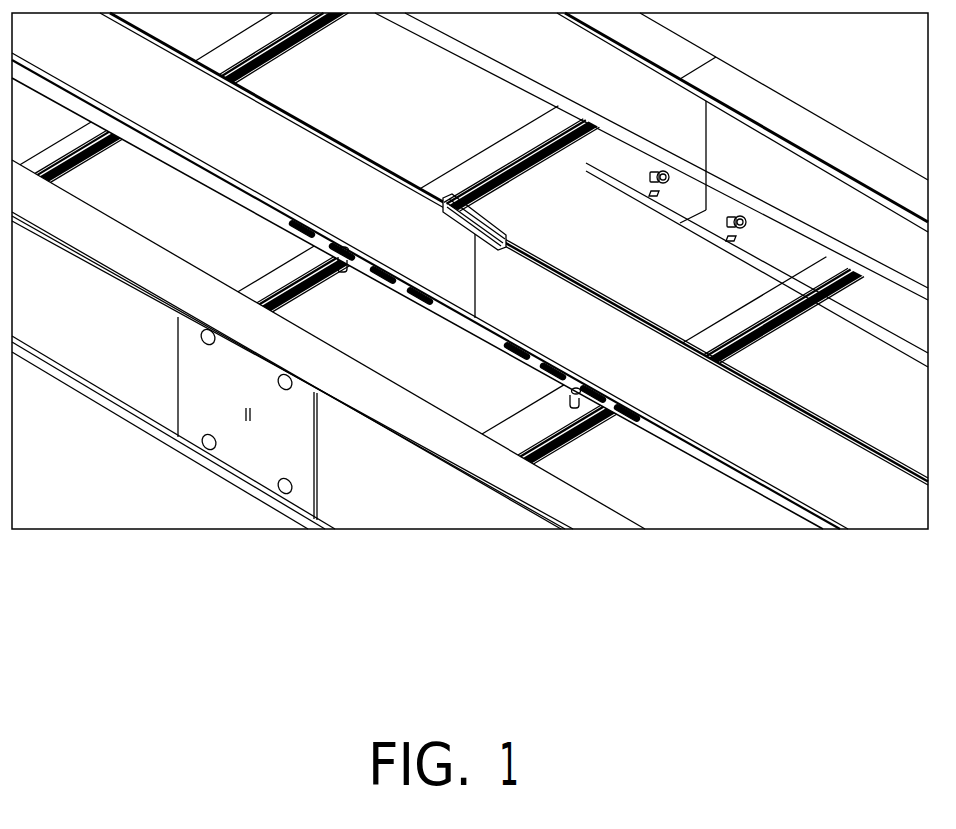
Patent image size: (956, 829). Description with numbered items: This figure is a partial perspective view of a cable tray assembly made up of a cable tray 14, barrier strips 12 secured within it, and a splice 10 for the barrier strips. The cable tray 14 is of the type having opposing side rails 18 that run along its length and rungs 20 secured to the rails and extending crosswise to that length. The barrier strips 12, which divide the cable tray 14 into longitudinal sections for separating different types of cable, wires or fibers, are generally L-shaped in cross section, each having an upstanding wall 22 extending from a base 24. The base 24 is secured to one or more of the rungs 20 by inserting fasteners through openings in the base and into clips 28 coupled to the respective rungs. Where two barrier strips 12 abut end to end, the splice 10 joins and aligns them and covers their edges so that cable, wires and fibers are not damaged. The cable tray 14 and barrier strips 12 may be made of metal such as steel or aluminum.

The splice 10 is at (504, 211).
The cable tray barrier strips 12 is at (336, 139).
The cable tray 14 is at (772, 69).
The side rails 18 is at (833, 138).
The rungs 20 is at (98, 158).
The upstanding wall 22 is at (268, 118).
The base 24 is at (230, 187).
The clips 28 is at (353, 273).